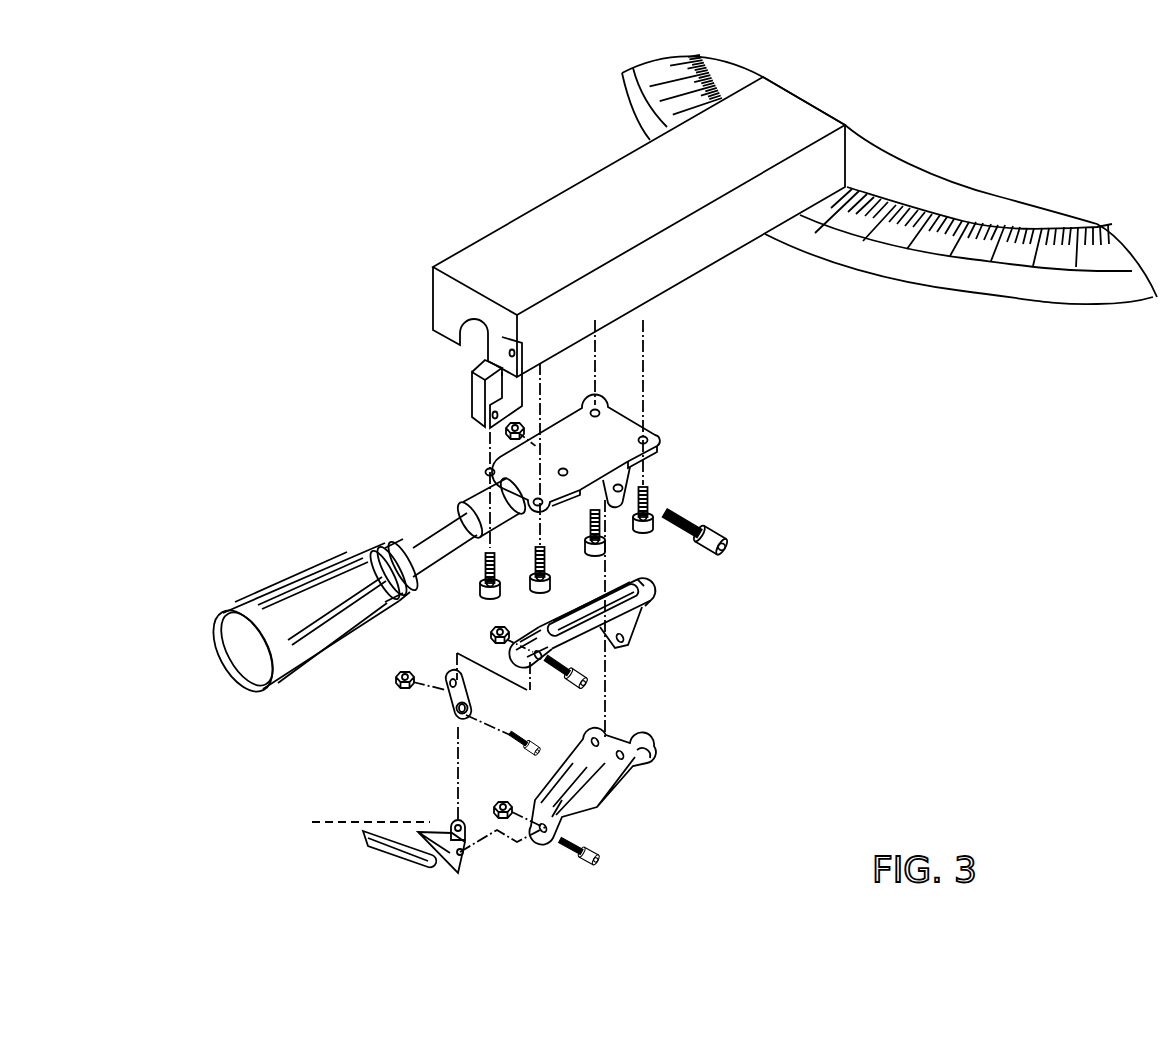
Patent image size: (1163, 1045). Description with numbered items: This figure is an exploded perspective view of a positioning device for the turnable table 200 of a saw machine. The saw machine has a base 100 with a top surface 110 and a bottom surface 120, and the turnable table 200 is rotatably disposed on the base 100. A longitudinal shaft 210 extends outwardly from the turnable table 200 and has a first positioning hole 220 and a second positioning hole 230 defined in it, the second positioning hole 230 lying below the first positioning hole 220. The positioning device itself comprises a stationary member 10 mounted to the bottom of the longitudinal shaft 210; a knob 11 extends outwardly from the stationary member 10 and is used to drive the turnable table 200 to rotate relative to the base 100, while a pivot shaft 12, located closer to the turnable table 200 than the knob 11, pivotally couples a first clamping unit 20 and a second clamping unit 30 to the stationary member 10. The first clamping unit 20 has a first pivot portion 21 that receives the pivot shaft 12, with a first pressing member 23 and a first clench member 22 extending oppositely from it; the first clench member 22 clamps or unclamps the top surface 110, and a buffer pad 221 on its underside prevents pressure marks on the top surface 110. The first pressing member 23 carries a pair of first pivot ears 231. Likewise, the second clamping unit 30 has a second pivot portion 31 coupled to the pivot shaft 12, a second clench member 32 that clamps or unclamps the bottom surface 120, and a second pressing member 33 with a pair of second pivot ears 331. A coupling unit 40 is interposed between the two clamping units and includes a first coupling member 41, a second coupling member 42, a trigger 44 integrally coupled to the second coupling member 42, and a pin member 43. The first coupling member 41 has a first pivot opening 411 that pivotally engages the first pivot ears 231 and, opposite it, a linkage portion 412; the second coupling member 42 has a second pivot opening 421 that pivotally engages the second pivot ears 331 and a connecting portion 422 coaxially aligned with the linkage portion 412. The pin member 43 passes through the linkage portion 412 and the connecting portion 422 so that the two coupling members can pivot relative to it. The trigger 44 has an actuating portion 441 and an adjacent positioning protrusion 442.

The base 100 is at (1082, 305).
The top surface 110 is at (907, 240).
The bottom surface 120 is at (800, 255).
The turnable table 200 is at (917, 174).
The longitudinal shaft 210 is at (520, 228).
The first positioning hole 220 is at (502, 340).
The second positioning hole 230 is at (472, 388).
The stationary member 10 is at (633, 418).
The knob 11 is at (315, 593).
The pivot shaft 12 is at (700, 530).
The first clamping unit 20 is at (601, 613).
The first pivot portion 21 is at (622, 644).
The first clench member 22 is at (655, 583).
The buffer pad 221 is at (650, 606).
The first pressing member 23 is at (535, 623).
The first pivot ears 231 is at (520, 650).
The second clamping unit 30 is at (667, 800).
The second pivot portion 31 is at (622, 760).
The second clench member 32 is at (644, 747).
The second pressing member 33 is at (560, 822).
The second pivot ears 331 is at (548, 838).
The coupling unit 40 is at (410, 793).
The first coupling member 41 is at (450, 712).
The first pivot opening 411 is at (447, 700).
The linkage portion 412 is at (458, 718).
The second coupling member 42 is at (448, 827).
The second pivot opening 421 is at (465, 860).
The connecting portion 422 is at (480, 825).
The pin member 43 is at (523, 733).
The trigger 44 is at (367, 845).
The actuating portion 441 is at (382, 852).
The positioning protrusion 442 is at (349, 822).